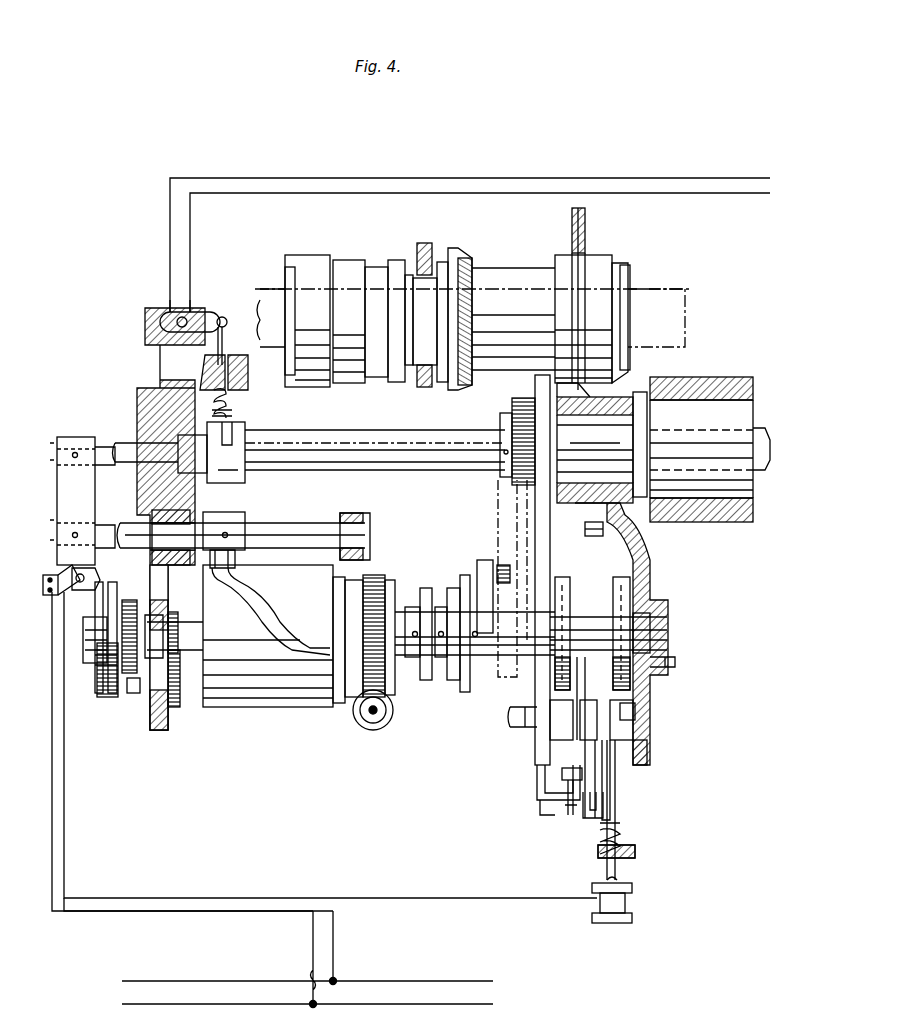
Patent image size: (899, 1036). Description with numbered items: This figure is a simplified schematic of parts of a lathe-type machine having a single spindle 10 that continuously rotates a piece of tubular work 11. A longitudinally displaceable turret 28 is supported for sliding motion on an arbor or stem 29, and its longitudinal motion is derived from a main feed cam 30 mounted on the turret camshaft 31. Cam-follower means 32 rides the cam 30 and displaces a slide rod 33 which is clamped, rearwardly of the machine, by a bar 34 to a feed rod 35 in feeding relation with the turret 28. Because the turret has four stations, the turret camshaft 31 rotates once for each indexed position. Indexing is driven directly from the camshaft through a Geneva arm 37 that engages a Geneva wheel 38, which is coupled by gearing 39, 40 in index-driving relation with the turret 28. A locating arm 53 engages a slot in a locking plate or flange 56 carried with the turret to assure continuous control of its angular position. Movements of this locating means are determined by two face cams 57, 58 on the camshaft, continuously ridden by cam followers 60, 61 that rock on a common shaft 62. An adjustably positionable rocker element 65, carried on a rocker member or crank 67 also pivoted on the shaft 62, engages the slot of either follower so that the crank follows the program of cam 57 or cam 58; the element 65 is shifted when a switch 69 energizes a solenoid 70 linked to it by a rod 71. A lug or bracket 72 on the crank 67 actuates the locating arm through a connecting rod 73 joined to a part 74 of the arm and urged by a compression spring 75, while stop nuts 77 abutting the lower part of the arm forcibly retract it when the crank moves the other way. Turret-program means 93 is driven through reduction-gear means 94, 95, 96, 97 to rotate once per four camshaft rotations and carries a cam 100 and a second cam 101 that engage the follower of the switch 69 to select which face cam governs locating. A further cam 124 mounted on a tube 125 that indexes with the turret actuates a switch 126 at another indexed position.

The spindle 10 is at (597, 262).
The piece of work 11 is at (657, 283).
The turret 28 is at (722, 520).
The arbor or stem 29 is at (757, 412).
The main feed cam 30 is at (258, 707).
The turret camshaft 31 is at (190, 660).
The cam-follower means 32 is at (238, 517).
The slide rod 33 is at (313, 525).
The bar 34 is at (65, 500).
The feed rod 35 is at (135, 444).
The Geneva arm 37 is at (480, 567).
The Geneva wheel 38 is at (498, 518).
The gearing 39 is at (472, 688).
The gearing 40 is at (513, 403).
The locating arm 53 is at (548, 541).
The locking plate or flange 56 is at (503, 426).
The face cam 57 is at (562, 583).
The face cam 58 is at (613, 583).
The cam follower 60 is at (648, 683).
The cam follower 61 is at (577, 680).
The common shaft 62 is at (640, 712).
The rocker element 65 is at (605, 755).
The rocker member or crank 67 is at (612, 800).
The switch 69 is at (52, 575).
The solenoid 70 is at (632, 900).
The rod 71 is at (615, 808).
The lug or bracket 72 is at (571, 768).
The connecting rod 73 is at (586, 812).
The part of the locating arm 74 is at (558, 800).
The compression spring 75 is at (547, 786).
The stop nuts 77 is at (570, 812).
The turret-program means 93 is at (112, 697).
The reduction-gear means 94 is at (173, 612).
The reduction-gear means 95 is at (176, 708).
The reduction-gear means 96 is at (133, 694).
The reduction-gear means 97 is at (130, 600).
The cam 100 is at (85, 588).
The second cam 101 is at (90, 690).
The cam 124 is at (248, 430).
The tube 125 is at (392, 468).
The switch 126 is at (193, 318).